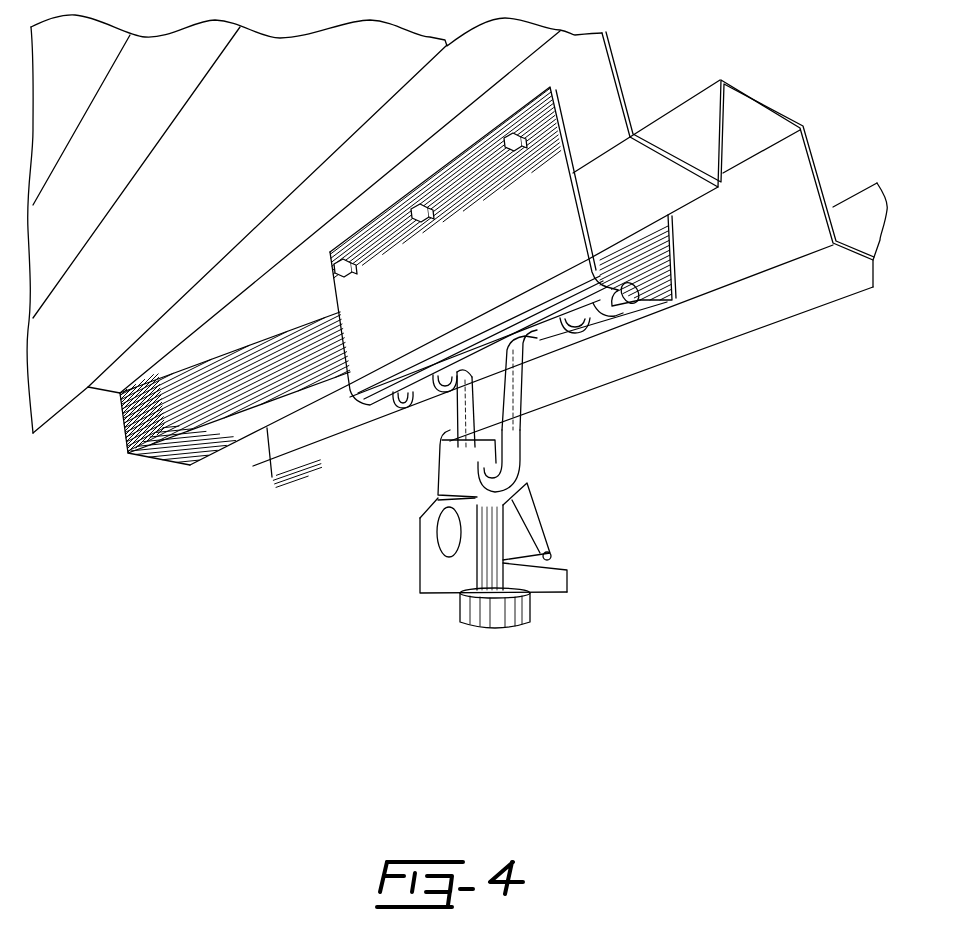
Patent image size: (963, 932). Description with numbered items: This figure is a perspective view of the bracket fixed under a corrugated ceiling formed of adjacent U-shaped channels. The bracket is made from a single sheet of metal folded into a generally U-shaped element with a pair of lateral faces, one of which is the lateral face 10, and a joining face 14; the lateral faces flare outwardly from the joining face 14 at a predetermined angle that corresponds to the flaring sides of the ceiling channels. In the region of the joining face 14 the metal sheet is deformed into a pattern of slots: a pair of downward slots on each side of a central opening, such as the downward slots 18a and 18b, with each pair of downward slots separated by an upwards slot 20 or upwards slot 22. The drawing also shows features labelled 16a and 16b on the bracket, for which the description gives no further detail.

The lateral face 10 is at (360, 322).
The joining face 14 is at (527, 437).
The first hook 16a is at (385, 412).
The second hook 16b is at (432, 415).
The downward slot 18a is at (535, 326).
The downward slot 18b is at (622, 305).
The upwards slot 20 is at (403, 413).
The upwards slot 22 is at (583, 333).